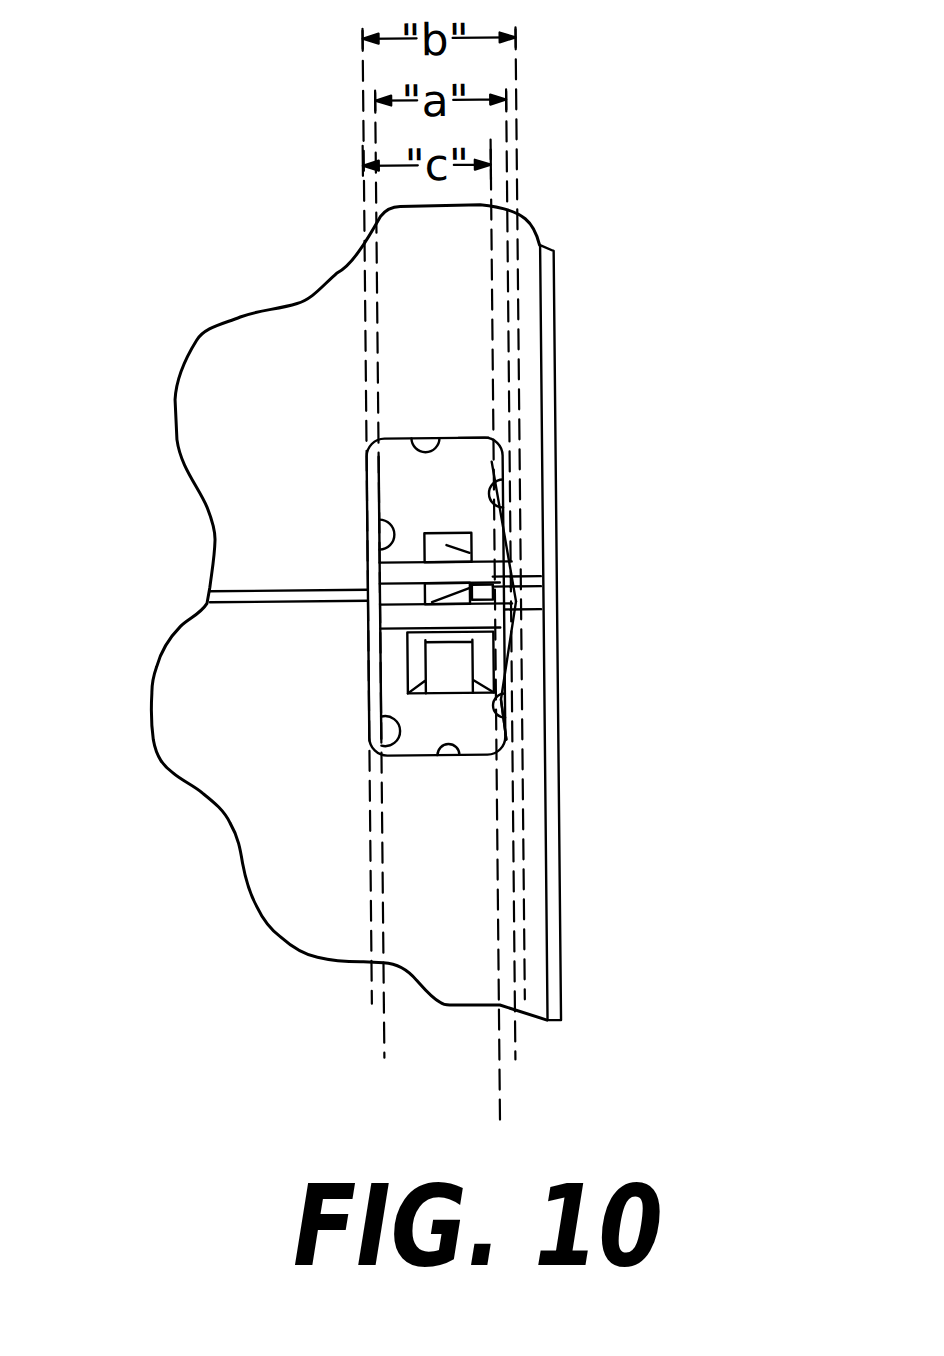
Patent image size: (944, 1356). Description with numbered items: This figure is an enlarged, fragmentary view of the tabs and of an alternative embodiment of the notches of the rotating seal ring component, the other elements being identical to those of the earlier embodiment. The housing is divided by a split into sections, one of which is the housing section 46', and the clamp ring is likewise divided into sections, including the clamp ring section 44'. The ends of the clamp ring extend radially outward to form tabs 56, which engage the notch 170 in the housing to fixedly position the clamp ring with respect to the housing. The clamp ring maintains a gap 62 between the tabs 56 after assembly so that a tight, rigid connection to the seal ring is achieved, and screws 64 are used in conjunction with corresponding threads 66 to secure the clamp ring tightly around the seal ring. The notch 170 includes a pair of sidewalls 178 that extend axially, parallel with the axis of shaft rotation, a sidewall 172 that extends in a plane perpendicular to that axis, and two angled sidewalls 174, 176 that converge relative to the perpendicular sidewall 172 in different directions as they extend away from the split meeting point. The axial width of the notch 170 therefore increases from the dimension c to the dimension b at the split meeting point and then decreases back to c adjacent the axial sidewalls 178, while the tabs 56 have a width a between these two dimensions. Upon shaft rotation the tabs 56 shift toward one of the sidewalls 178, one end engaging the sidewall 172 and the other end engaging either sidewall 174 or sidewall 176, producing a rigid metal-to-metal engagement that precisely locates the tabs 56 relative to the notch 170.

The housing section 46' is at (323, 610).
The clamp ring section 44' is at (572, 344).
The tabs 56 is at (515, 565).
The gap 62 is at (500, 600).
The screws 64 is at (405, 648).
The threads 66 is at (422, 560).
The notch 170 is at (364, 466).
The sidewall 172 is at (370, 523).
The sidewall 174 is at (500, 492).
The sidewall 176 is at (490, 698).
The sidewalls 178 is at (446, 437).